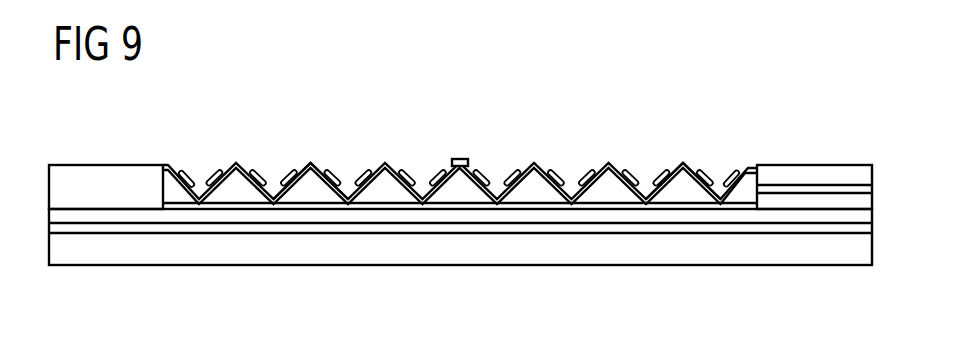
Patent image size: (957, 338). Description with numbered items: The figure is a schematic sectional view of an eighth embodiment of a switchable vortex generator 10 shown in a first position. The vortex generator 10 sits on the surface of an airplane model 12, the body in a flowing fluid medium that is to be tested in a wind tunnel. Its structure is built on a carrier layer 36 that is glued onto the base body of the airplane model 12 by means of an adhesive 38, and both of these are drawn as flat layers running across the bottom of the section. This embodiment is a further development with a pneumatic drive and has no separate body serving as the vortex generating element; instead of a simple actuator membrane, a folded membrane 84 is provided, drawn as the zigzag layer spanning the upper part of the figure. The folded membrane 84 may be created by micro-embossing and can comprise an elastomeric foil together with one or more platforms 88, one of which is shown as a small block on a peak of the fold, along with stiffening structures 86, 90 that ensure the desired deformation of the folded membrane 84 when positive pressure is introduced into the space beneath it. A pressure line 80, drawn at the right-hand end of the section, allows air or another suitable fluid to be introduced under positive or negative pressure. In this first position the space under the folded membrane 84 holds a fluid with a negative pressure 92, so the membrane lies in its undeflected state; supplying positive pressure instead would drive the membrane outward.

The switchable vortex generator 10 is at (522, 96).
The airplane model 12 is at (677, 250).
The carrier layer 36 is at (402, 212).
The adhesive 38 is at (550, 228).
The pressure line 80 is at (808, 190).
The folded membrane 84 is at (690, 150).
The corrugated absorber layer 86 is at (305, 172).
The platform 88 is at (462, 160).
The electrode segments 90 is at (562, 175).
The fluid with a negative pressure 92 is at (235, 180).